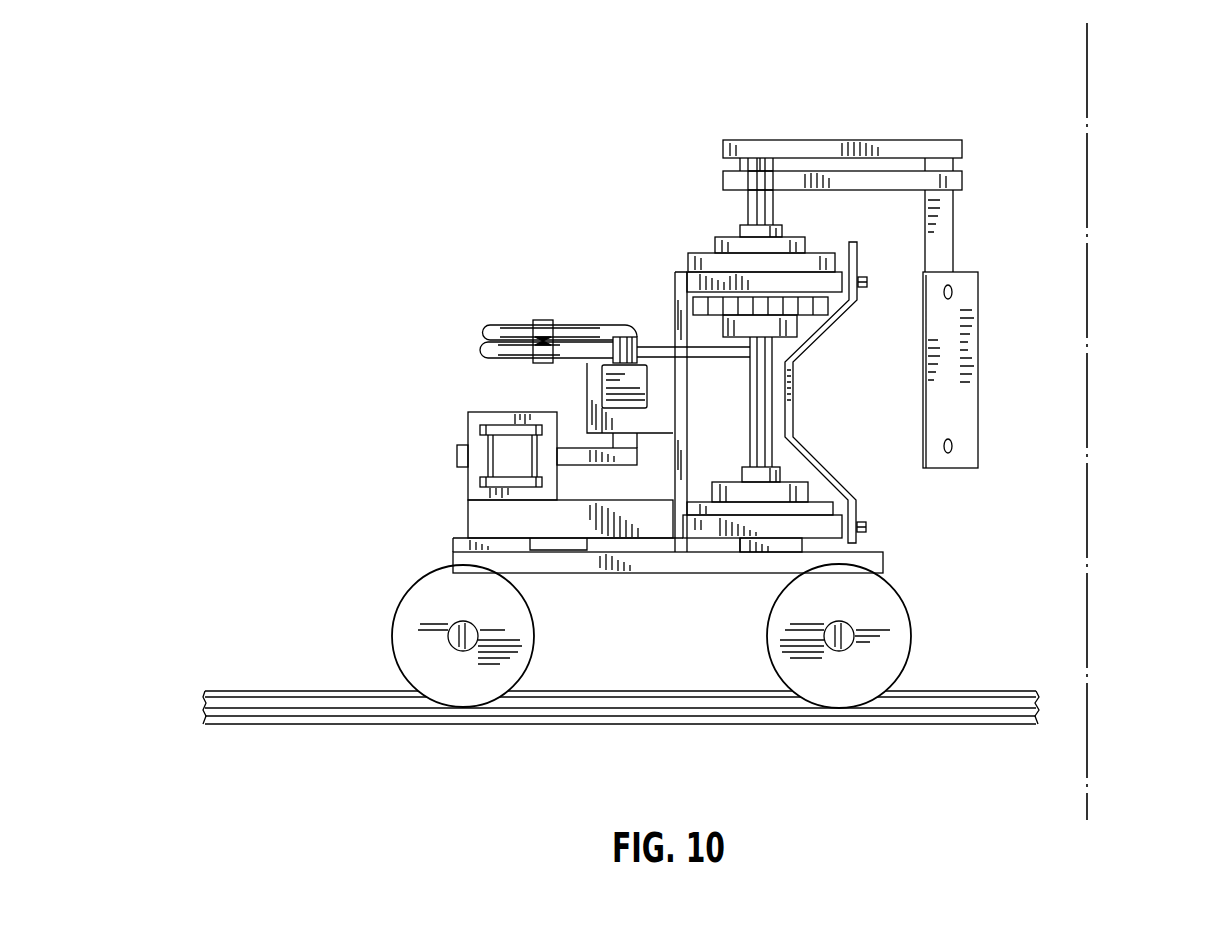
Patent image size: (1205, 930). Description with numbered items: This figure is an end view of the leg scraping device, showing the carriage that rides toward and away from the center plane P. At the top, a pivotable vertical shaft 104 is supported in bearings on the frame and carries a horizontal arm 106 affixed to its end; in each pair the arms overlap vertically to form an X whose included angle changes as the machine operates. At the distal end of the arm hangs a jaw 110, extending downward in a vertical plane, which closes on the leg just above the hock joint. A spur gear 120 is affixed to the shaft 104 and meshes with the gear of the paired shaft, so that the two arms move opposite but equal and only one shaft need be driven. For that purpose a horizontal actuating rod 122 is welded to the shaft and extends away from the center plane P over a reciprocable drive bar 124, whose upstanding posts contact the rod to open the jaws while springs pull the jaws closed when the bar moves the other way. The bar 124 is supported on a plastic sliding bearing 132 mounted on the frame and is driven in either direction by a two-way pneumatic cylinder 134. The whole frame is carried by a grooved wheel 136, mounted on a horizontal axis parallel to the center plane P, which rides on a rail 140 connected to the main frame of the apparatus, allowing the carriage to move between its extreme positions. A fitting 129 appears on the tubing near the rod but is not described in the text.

The pivotable vertical shaft 104 is at (748, 203).
The horizontal arm 106 is at (823, 138).
The jaw 110 is at (965, 363).
The spur gear 120 is at (694, 303).
The horizontal actuating rod 122 is at (483, 357).
The reciprocable drive bar 124 is at (647, 390).
The nozzle tube and clamp 129 is at (505, 322).
The plastic sliding bearing 132 is at (592, 392).
The two-way pneumatic cylinder 134 is at (468, 480).
The wheel 136 is at (909, 643).
The rail 140 is at (636, 708).
The center plane P is at (1088, 100).